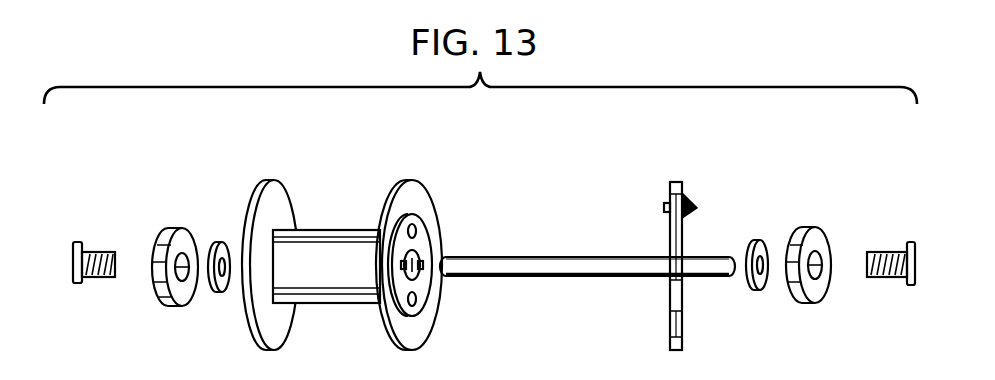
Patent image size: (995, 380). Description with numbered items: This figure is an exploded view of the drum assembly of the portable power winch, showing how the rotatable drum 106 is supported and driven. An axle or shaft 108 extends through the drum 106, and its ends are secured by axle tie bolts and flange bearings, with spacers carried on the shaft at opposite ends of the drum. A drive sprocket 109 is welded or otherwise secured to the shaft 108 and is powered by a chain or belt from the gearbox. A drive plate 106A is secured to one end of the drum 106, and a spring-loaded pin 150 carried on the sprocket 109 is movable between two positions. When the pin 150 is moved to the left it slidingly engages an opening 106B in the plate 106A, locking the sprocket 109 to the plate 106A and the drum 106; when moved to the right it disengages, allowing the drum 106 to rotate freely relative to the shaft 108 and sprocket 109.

The drum 106 is at (341, 303).
The drive plate 106A is at (423, 305).
The opening 106B is at (418, 230).
The axle or shaft 108 is at (562, 257).
The drive sprocket 109 is at (673, 182).
The spring-loaded pin 150 is at (694, 206).